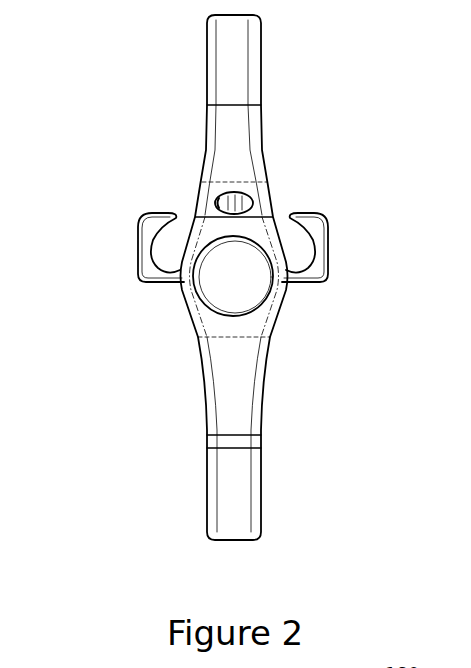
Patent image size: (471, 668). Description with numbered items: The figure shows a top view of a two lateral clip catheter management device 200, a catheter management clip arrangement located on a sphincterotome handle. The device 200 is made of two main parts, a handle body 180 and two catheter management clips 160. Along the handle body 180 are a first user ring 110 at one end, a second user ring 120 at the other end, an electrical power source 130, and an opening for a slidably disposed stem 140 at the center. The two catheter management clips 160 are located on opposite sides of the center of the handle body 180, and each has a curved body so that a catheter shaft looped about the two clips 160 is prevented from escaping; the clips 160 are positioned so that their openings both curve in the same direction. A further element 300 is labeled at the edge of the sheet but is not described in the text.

The two lateral clip catheter management device 200 is at (130, 140).
The first user ring 110 is at (262, 95).
The second user ring 120 is at (207, 492).
The electrical power source 130 is at (241, 197).
The opening for a slidably disposed stem 140 is at (270, 292).
The catheter management clips 160 is at (138, 257).
The handle body 180 is at (196, 224).
The mounting element 300 is at (470, 594).